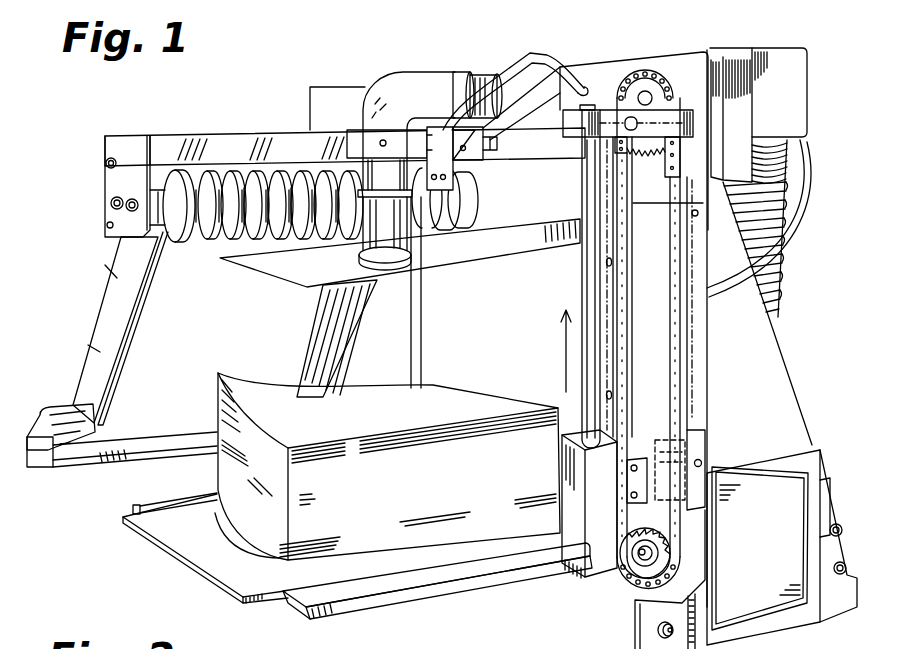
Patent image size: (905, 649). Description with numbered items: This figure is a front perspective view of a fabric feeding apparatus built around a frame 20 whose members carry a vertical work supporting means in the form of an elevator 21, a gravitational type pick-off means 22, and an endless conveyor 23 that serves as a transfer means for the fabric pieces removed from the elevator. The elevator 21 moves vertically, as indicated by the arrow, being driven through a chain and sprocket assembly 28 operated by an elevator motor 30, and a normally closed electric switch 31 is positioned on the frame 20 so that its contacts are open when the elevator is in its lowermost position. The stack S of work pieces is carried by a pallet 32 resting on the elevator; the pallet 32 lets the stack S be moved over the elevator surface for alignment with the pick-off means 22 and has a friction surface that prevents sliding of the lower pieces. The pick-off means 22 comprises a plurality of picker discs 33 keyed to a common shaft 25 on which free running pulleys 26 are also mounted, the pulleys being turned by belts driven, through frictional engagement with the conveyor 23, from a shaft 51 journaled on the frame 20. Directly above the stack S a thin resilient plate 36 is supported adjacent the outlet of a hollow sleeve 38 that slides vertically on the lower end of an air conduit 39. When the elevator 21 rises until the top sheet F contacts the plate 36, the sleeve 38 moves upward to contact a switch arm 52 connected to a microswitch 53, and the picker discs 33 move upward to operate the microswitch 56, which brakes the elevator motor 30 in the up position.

The frame 20 is at (346, 79).
The elevator 21 is at (135, 506).
The pick-off means 22 is at (233, 153).
The endless conveyor 23 is at (344, 340).
The common shaft 25 is at (128, 238).
The free running pulleys 26 is at (171, 246).
The chain and sprocket assembly 28 is at (646, 78).
The elevator motor 30 is at (770, 46).
The electric switch 31 is at (665, 455).
The pallet 32 is at (185, 563).
The picker discs 33 is at (322, 240).
The resilient plate 36 is at (287, 287).
The hollow sleeve 38 is at (360, 257).
The air conduit 39 is at (380, 88).
The shaft 51 is at (111, 203).
The switch arm 52 is at (455, 198).
The microswitch 53 is at (456, 170).
The microswitch 56 is at (497, 143).
The top sheet F is at (470, 398).
The stack S is at (216, 462).